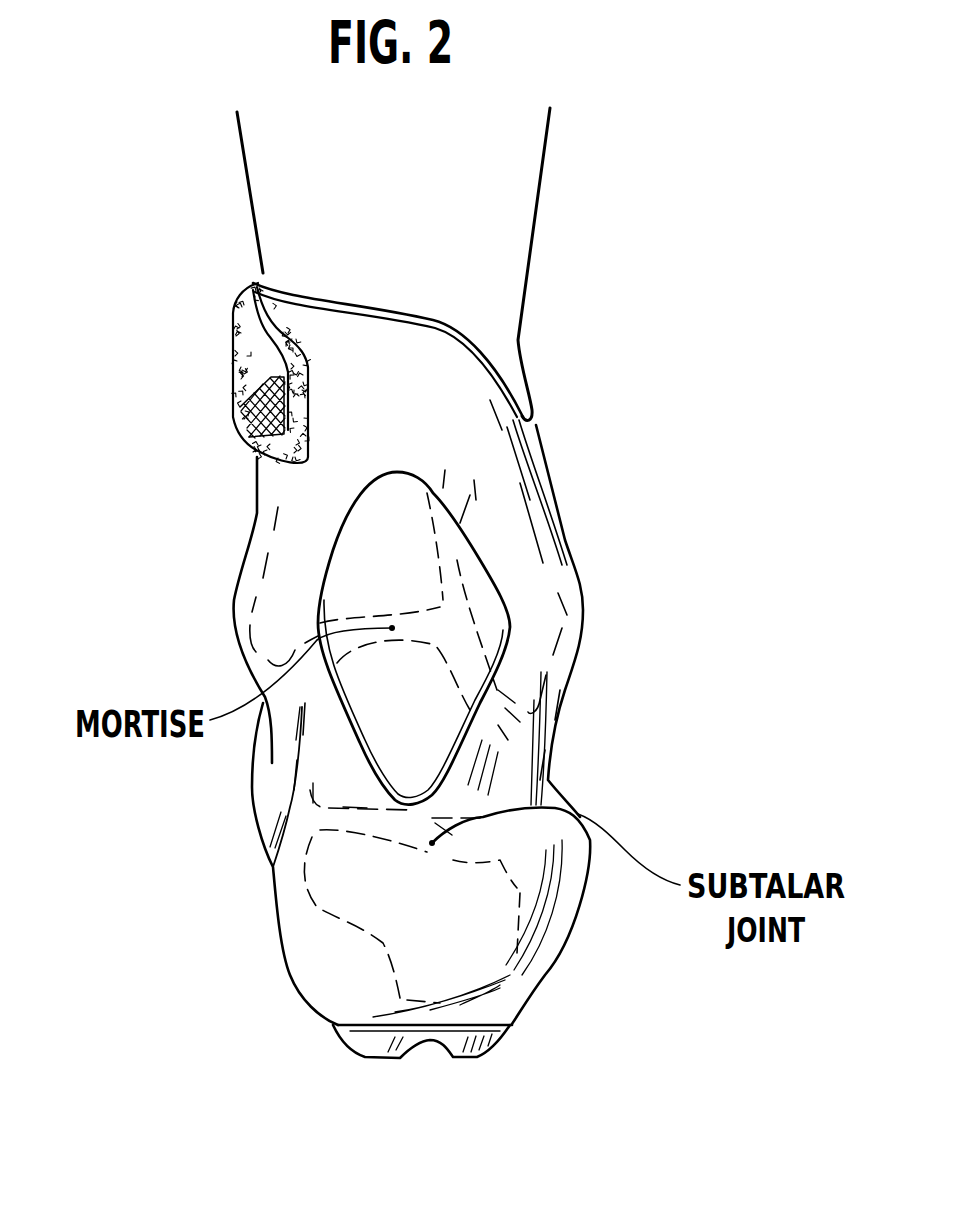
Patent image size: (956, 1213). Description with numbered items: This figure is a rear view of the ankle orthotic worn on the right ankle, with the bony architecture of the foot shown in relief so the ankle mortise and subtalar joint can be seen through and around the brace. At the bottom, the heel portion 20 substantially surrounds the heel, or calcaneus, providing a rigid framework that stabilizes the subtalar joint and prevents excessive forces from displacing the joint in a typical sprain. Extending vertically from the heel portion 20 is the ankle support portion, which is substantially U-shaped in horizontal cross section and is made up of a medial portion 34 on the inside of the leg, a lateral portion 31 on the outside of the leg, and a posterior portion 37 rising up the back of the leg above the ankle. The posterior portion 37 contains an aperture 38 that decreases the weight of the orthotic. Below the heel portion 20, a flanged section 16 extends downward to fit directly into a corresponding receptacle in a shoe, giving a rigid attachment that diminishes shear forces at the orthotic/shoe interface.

The flanged section 16 is at (467, 1043).
The heel portion 20 is at (447, 907).
The lateral portion 31 is at (525, 618).
The medial portion 34 is at (286, 741).
The posterior portion 37 is at (420, 438).
The aperture 38 is at (403, 640).